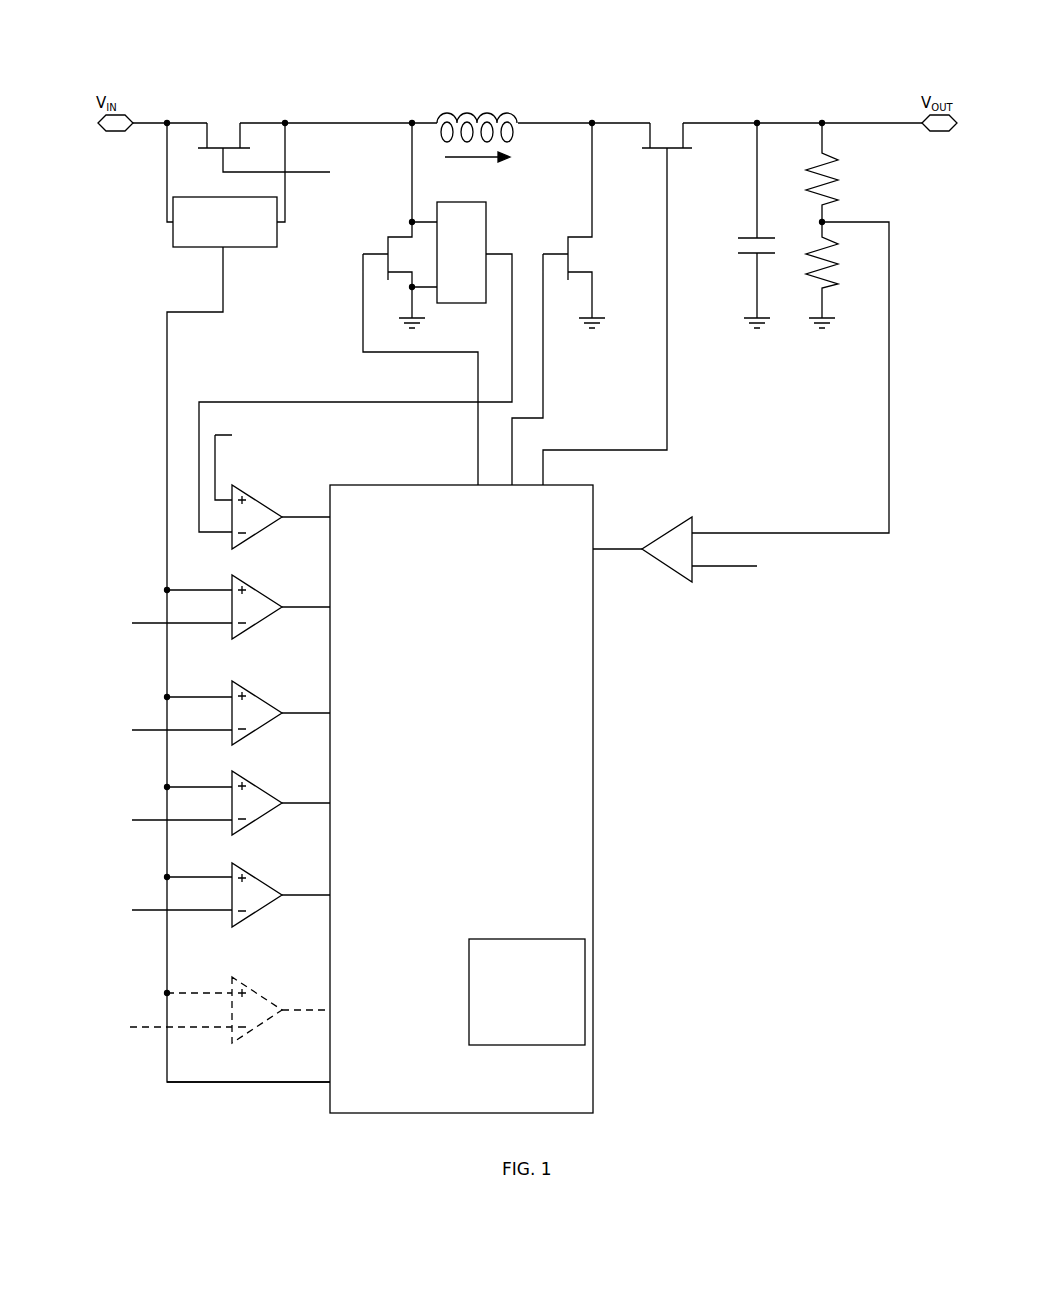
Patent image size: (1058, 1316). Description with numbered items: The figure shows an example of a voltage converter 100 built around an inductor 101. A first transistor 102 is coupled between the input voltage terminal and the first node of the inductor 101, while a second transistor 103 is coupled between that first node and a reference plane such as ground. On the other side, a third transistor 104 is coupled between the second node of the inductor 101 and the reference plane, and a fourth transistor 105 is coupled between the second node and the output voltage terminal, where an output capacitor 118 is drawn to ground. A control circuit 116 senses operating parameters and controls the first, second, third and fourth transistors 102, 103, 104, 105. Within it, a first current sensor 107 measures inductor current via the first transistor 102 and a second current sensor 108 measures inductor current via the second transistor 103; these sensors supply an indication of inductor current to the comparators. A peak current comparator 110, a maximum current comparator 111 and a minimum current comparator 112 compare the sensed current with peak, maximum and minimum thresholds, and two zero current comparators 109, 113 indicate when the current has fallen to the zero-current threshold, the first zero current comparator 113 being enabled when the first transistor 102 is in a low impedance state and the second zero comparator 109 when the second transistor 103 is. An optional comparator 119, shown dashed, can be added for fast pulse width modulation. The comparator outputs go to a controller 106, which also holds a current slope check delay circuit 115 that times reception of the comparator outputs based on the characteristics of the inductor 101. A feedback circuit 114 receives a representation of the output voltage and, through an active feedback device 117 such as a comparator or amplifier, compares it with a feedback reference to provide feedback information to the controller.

The voltage converter 100 is at (587, 50).
The inductor 101 is at (480, 118).
The first transistor 102 is at (221, 153).
The second transistor 103 is at (388, 237).
The third transistor 104 is at (568, 250).
The fourth transistor 105 is at (662, 152).
The controller 106 is at (594, 737).
The first current sensor 107 is at (190, 250).
The second current sensor 108 is at (460, 303).
The second zero current comparator 109 is at (258, 533).
The peak current comparator 110 is at (258, 623).
The maximum current comparator 111 is at (258, 730).
The minimum current comparator 112 is at (263, 817).
The first zero current comparator 113 is at (263, 908).
The feedback circuit 114 is at (918, 288).
The current slope check delay circuit 115 is at (478, 939).
The control circuit 116 is at (330, 1160).
The active feedback device 117 is at (668, 570).
The output capacitor 118 is at (748, 258).
The optional comparator 119 is at (263, 1027).